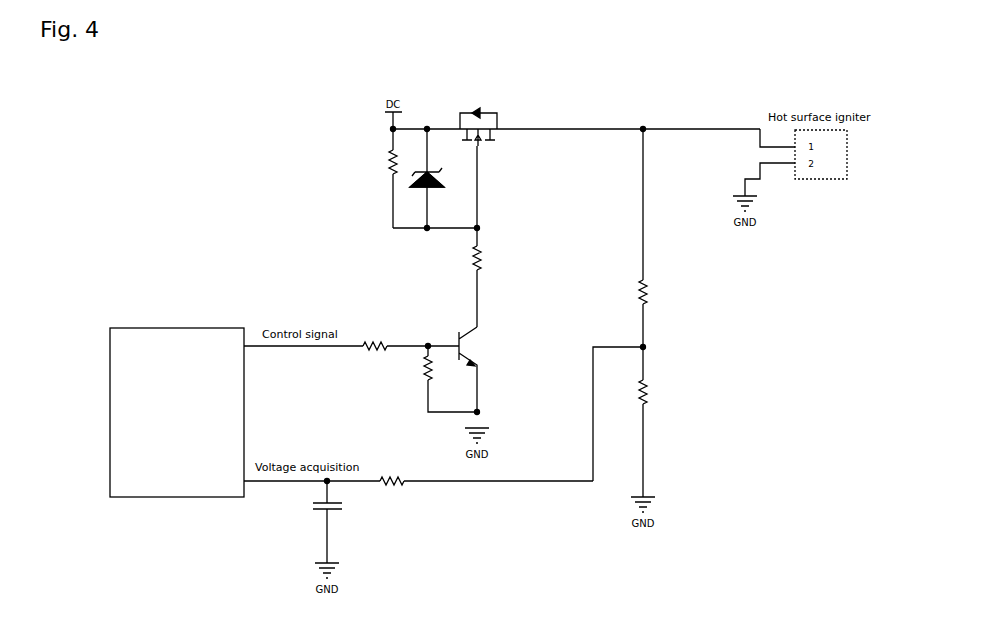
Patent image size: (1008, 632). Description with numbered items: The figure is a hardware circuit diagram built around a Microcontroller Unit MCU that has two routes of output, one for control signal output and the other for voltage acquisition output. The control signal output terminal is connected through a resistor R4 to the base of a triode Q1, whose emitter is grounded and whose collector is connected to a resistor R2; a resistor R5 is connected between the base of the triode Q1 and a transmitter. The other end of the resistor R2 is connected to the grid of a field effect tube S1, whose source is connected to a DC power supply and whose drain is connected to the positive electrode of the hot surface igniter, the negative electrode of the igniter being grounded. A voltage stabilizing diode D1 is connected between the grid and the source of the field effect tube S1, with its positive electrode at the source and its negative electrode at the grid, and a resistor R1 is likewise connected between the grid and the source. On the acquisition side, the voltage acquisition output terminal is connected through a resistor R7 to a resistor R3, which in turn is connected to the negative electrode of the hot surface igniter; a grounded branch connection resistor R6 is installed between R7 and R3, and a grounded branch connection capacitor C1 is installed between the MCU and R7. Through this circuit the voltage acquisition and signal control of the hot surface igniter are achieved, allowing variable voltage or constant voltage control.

The resistor R1 is at (377, 178).
The resistor R2 is at (486, 236).
The resistor R3 is at (336, 339).
The resistor R4 is at (450, 379).
The resistor R5 is at (652, 238).
The branch connection resistor R6 is at (652, 422).
The resistor R7 is at (418, 473).
The branch connection capacitor C1 is at (335, 522).
The voltage stabilizing diode D1 is at (436, 178).
The triode Q1 is at (469, 369).
The field effect tube S1 is at (473, 120).
The Microcontroller Unit MCU is at (177, 412).